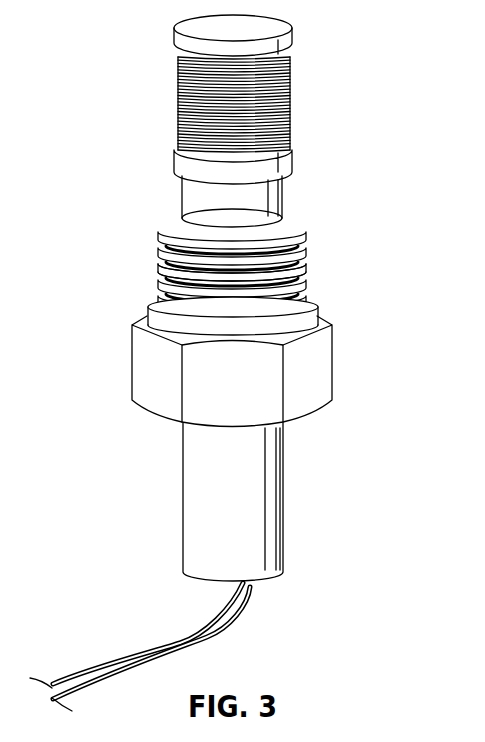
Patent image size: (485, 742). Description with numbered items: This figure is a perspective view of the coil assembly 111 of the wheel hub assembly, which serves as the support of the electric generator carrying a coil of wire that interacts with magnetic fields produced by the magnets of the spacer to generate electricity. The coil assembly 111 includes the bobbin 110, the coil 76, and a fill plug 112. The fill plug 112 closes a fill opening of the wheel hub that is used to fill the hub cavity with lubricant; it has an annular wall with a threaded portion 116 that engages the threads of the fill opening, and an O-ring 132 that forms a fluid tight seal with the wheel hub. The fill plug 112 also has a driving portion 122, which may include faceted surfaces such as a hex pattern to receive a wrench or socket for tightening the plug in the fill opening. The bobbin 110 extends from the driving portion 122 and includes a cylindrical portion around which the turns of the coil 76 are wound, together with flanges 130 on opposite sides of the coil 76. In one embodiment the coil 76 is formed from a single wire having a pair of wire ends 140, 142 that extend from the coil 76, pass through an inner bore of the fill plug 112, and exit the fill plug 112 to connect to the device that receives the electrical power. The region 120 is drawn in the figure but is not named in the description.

The coil assembly 111 is at (132, 84).
The flanges 130 is at (283, 162).
The coil 76 is at (277, 90).
The bobbin 110 is at (282, 198).
The threaded portion 120 is at (162, 227).
The threaded portion 116 is at (293, 290).
The O-ring 132 is at (313, 315).
The fill plug 112 is at (155, 375).
The driving portion 122 is at (267, 375).
The wire end 142 is at (217, 620).
The wire end 140 is at (237, 620).